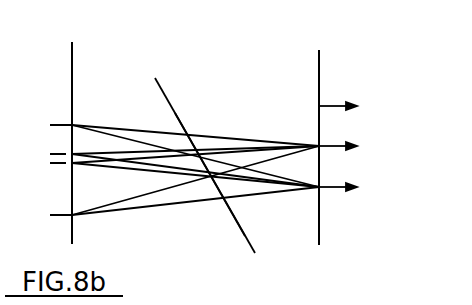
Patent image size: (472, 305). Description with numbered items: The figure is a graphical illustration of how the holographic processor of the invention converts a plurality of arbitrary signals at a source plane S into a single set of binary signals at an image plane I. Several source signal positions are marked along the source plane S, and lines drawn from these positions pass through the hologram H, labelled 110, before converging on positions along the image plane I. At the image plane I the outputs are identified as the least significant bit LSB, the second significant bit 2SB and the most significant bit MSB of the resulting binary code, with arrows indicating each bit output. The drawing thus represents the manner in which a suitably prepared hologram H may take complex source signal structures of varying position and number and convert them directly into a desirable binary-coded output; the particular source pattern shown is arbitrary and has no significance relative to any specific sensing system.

The hologram 110 is at (187, 225).
The hologram H is at (201, 158).
The source plane S is at (65, 131).
The image plane I is at (317, 29).
The least significant bit output LSB is at (355, 108).
The second significant bit output 2SB is at (356, 148).
The most significant bit output MSB is at (357, 189).